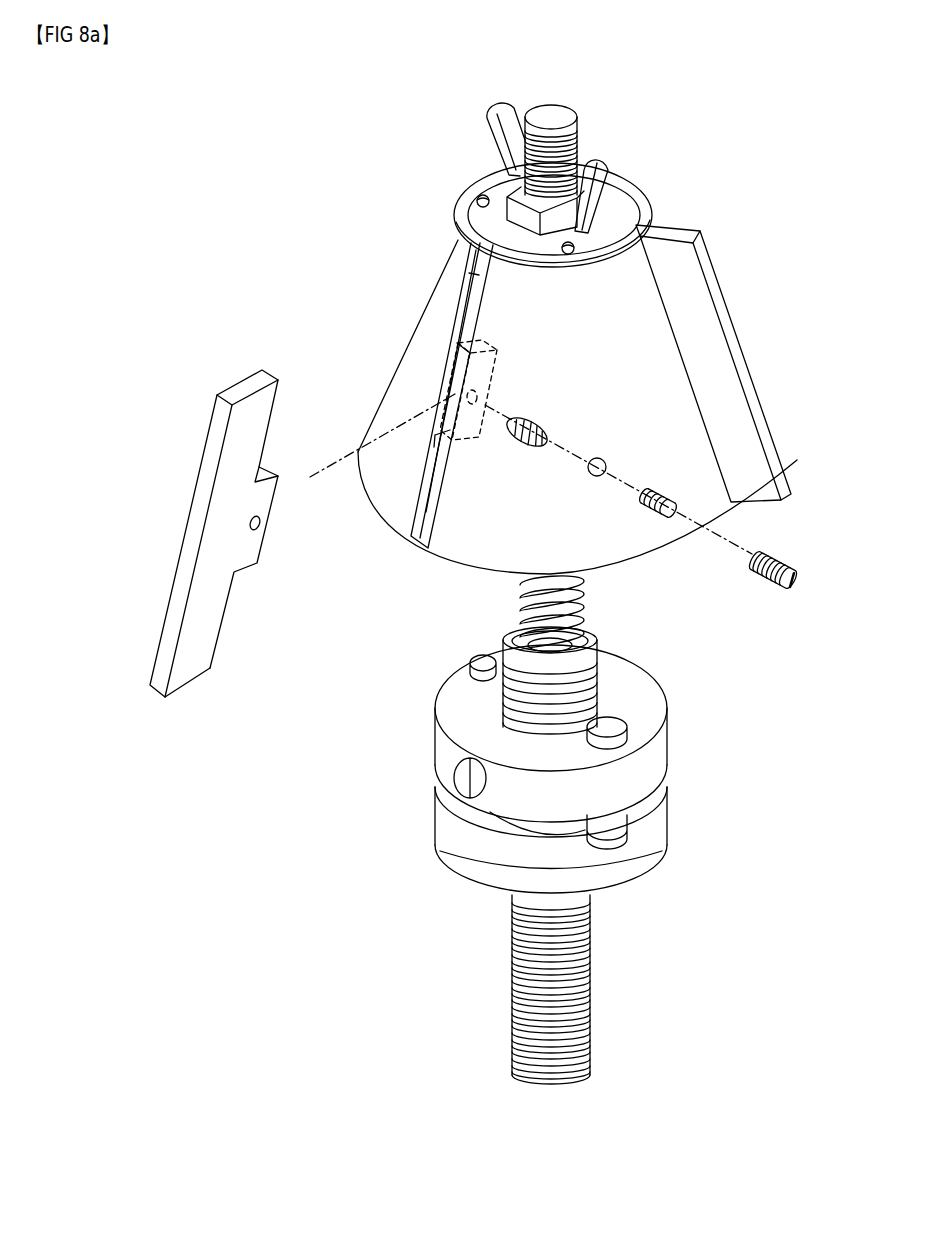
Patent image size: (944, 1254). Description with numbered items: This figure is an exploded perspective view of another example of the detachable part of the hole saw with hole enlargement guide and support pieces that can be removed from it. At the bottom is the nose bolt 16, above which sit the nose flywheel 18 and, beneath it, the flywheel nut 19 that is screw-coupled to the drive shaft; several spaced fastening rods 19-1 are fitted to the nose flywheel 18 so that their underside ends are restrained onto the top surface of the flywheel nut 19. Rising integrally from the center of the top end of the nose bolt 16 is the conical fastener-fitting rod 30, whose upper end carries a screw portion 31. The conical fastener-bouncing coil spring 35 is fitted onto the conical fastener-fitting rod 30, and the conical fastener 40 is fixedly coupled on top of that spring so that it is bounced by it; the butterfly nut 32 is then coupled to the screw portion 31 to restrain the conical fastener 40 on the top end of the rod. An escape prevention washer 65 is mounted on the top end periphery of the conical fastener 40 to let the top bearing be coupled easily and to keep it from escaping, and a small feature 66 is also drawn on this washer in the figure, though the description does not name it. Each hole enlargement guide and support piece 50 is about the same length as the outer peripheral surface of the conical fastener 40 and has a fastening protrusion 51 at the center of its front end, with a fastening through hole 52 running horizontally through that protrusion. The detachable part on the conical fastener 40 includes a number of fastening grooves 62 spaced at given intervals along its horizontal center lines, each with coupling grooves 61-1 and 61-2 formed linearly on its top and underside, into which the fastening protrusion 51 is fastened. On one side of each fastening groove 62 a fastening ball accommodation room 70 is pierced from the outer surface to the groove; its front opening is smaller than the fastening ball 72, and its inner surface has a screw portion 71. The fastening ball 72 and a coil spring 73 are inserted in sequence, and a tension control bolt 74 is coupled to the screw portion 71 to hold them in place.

The nose bolt 16 is at (592, 986).
The nose flywheel 18 is at (652, 752).
The flywheel nut 19 is at (466, 862).
The fastening rod 19-1 is at (495, 658).
The conical fastener-fitting rod 30 is at (548, 655).
The screw portion 31 is at (580, 130).
The butterfly nut 32 is at (490, 119).
The conical fastener-bouncing coil spring 35 is at (585, 591).
The conical fastener 40 is at (632, 300).
The hole enlargement guide and support piece 50 is at (745, 374).
The fastening protrusion 51 is at (266, 490).
The fastening through hole 52 is at (262, 523).
The coupling groove 61-1 is at (478, 273).
The coupling groove 61-2 is at (430, 497).
The fastening groove 62 is at (457, 370).
The escape prevention washer 65 is at (613, 205).
The fixing hole 66 is at (480, 199).
The fastening ball accommodation room 70 is at (455, 381).
The screw portion 71 is at (537, 442).
The fastening ball 72 is at (606, 463).
The coil spring 73 is at (672, 495).
The tension control bolt 74 is at (796, 580).